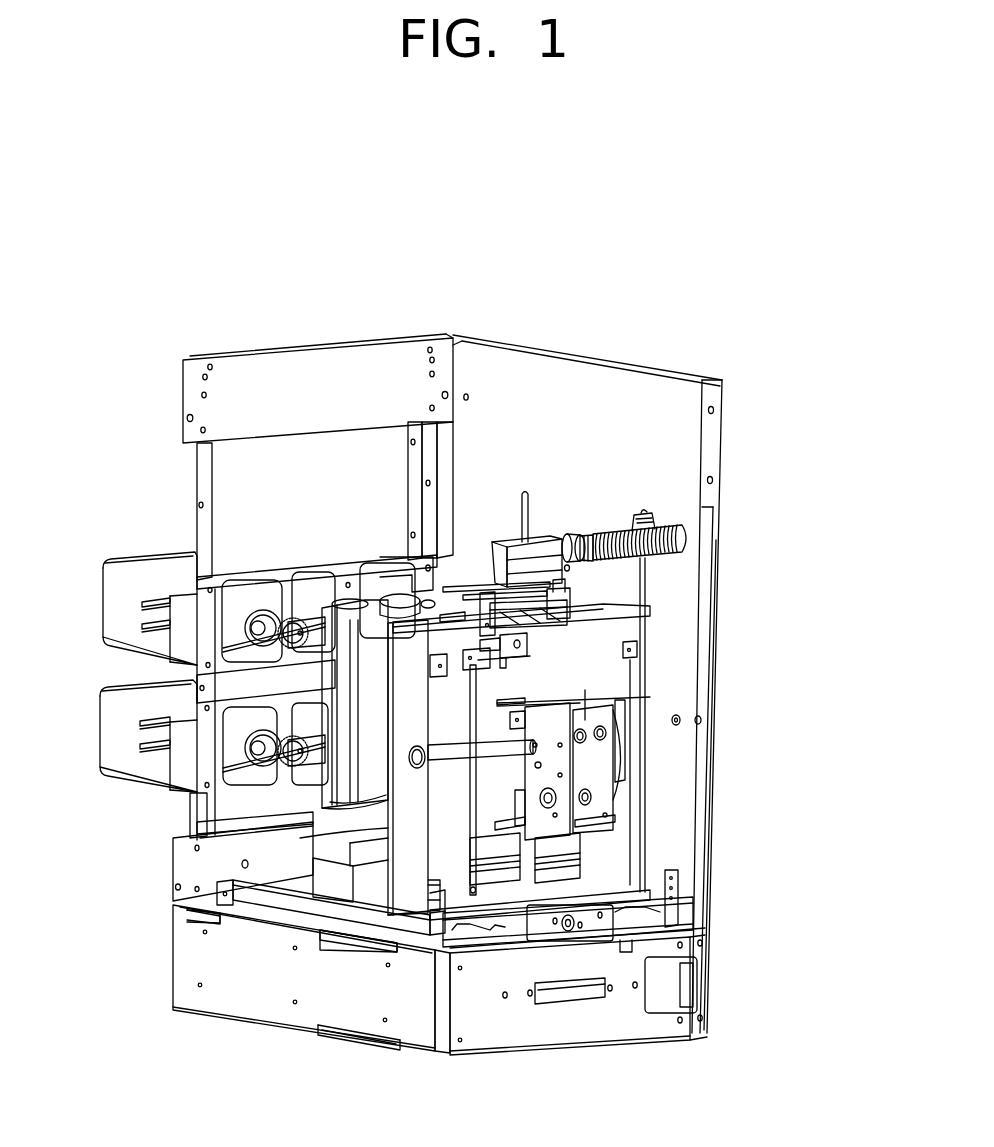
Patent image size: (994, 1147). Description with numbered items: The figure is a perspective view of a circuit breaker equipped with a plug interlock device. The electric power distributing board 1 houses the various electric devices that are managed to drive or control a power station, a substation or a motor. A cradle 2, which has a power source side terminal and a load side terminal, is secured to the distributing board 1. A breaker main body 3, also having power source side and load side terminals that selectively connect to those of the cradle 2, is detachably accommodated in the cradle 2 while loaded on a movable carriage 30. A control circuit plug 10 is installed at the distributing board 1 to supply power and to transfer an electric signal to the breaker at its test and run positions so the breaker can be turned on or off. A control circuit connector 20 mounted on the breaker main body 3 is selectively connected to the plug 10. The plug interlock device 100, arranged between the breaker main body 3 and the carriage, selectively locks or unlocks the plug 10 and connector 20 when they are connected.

The electric power distributing board 1 is at (738, 419).
The cradle 2 is at (118, 738).
The breaker main body 3 is at (413, 835).
The control circuit plug 10 is at (548, 569).
The control circuit connector 20 is at (570, 604).
The movable carriage 30 is at (298, 908).
The plug interlock device 100 is at (545, 650).